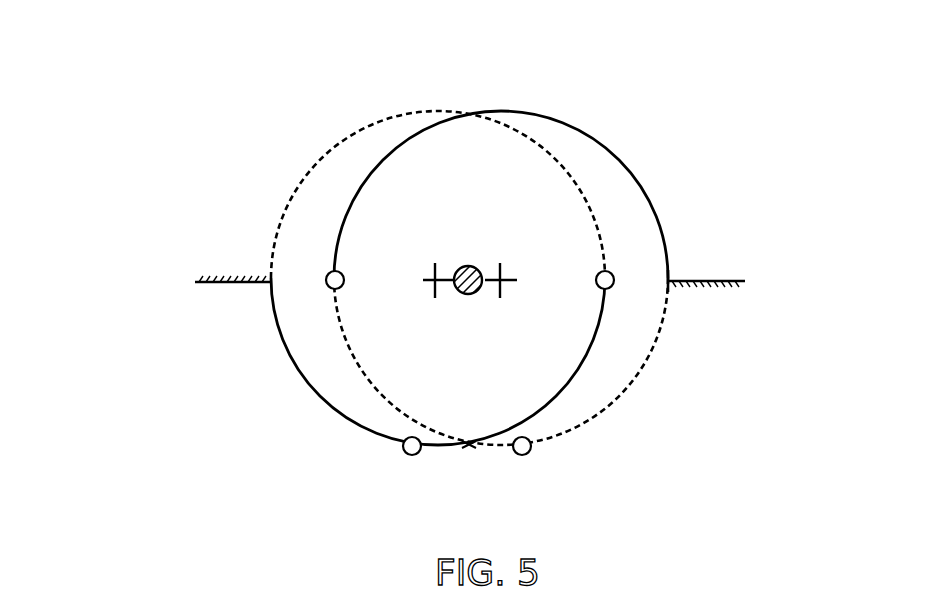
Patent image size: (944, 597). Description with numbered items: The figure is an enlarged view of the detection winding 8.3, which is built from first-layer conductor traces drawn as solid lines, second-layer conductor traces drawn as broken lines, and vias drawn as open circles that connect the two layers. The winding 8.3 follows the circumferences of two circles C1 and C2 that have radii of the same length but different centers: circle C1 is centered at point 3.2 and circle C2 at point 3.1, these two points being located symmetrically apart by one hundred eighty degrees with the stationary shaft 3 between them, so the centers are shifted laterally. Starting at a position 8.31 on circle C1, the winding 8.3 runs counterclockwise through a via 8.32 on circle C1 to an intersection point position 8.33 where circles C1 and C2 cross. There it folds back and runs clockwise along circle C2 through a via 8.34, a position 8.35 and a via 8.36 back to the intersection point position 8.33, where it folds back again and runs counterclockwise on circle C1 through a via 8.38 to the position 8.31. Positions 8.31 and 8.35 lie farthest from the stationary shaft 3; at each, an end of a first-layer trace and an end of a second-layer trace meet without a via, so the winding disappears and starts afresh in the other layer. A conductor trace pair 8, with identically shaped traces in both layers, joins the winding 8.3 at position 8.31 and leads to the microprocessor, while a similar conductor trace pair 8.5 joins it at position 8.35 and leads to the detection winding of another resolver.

The stationary shaft 3 is at (476, 265).
The center point of circle C2 3.1 is at (434, 266).
The center point of circle C1 3.2 is at (508, 277).
The conductor trace pair 8 is at (713, 280).
The detection winding 8.3 is at (565, 117).
The position on circle C1 8.31 is at (670, 278).
The via on circle C1 8.32 is at (328, 273).
The intersection point position 8.33 is at (468, 447).
The via on circle C2 8.34 is at (404, 448).
The position on circle C2 8.35 is at (270, 283).
The via on circle C2 8.36 is at (606, 289).
The via on circle C1 8.38 is at (530, 452).
The conductor trace pair 8.5 is at (212, 284).
The circle C1 is at (587, 133).
The circle C2 is at (365, 127).